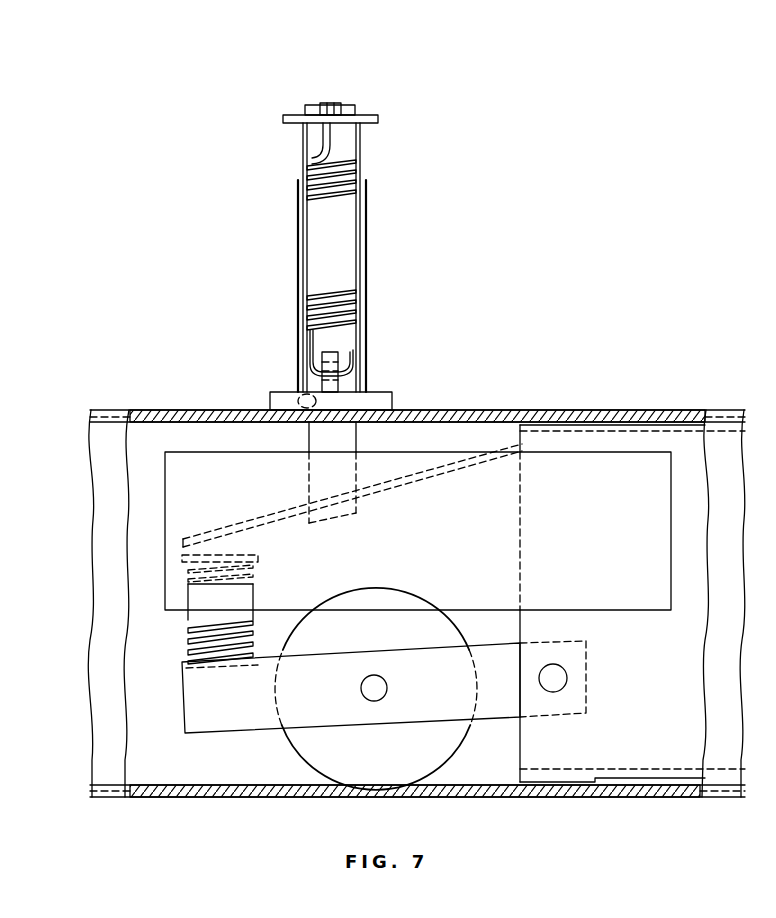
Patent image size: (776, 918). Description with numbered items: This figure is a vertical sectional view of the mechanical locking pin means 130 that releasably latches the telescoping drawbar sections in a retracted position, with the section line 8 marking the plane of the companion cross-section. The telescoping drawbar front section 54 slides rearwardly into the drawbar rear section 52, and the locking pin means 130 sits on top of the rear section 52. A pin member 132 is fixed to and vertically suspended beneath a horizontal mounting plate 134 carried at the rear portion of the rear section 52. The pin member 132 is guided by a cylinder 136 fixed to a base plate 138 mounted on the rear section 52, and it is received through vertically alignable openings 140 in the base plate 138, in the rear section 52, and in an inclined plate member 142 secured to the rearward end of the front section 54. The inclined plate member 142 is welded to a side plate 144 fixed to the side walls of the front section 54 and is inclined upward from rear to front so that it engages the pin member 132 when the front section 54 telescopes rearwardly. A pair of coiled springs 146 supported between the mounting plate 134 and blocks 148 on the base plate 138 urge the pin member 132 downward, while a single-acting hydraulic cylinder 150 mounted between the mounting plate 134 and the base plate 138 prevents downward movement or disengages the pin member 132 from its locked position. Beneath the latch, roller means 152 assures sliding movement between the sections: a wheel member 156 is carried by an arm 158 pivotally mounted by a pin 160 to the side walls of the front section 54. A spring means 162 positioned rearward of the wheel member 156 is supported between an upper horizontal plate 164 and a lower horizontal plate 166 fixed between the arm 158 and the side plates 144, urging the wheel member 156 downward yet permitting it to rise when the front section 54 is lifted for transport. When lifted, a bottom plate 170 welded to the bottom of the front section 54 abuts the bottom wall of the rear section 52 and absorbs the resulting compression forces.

The section line 8- 8 is at (78, 85).
The drawbar rear section 52 is at (518, 410).
The telescoping drawbar front section 54 is at (520, 428).
The mechanical locking pin means 130 is at (390, 247).
The pin member 132 is at (344, 436).
The horizontal mounting plate 134 is at (378, 119).
The cylinder 136 is at (358, 149).
The base plate 138 is at (392, 400).
The openings 140 is at (302, 395).
The inclined plate member 142 is at (398, 484).
The side plate 144 is at (172, 489).
The coiled springs 146 is at (350, 196).
The blocks 148 is at (340, 386).
The single-acting hydraulic cylinder 150 is at (300, 243).
The roller means 152 is at (252, 750).
The wheel member 156 is at (441, 751).
The arm 158 is at (186, 720).
The pin 160 is at (541, 672).
The spring means 162 is at (190, 645).
The upper horizontal plate 164 is at (240, 559).
The lower horizontal plate 166 is at (248, 664).
The bottom plate 170 is at (602, 784).